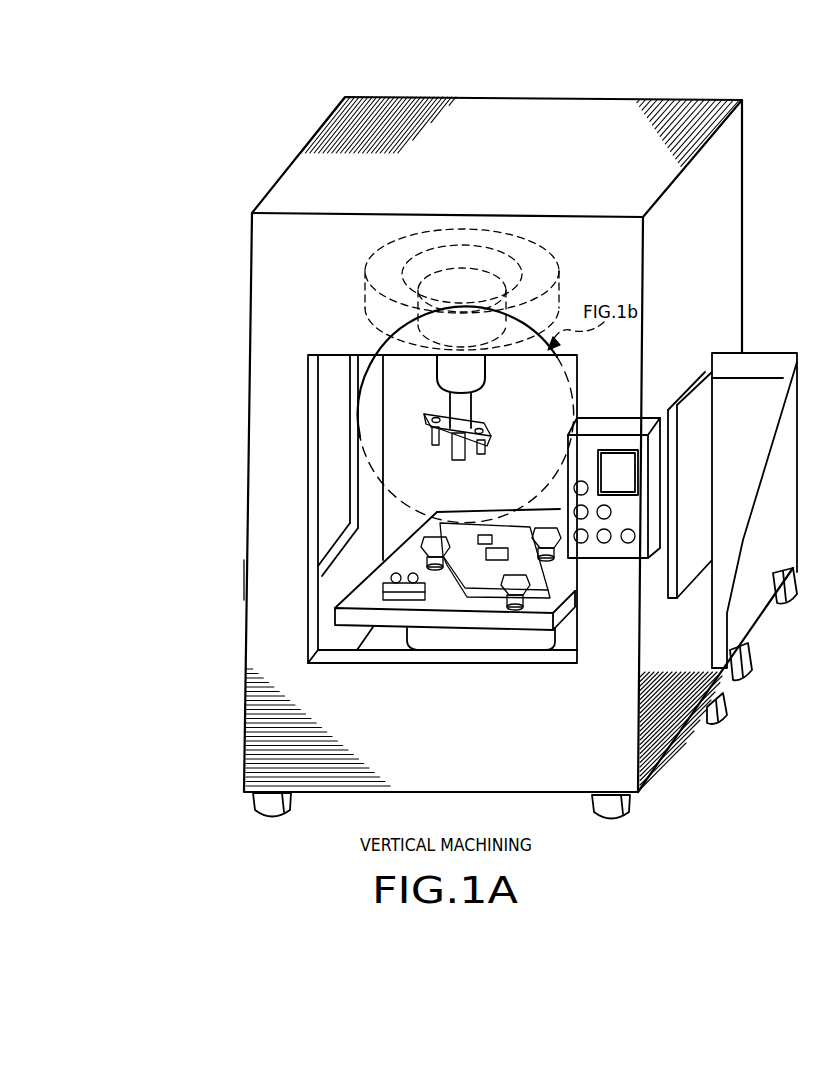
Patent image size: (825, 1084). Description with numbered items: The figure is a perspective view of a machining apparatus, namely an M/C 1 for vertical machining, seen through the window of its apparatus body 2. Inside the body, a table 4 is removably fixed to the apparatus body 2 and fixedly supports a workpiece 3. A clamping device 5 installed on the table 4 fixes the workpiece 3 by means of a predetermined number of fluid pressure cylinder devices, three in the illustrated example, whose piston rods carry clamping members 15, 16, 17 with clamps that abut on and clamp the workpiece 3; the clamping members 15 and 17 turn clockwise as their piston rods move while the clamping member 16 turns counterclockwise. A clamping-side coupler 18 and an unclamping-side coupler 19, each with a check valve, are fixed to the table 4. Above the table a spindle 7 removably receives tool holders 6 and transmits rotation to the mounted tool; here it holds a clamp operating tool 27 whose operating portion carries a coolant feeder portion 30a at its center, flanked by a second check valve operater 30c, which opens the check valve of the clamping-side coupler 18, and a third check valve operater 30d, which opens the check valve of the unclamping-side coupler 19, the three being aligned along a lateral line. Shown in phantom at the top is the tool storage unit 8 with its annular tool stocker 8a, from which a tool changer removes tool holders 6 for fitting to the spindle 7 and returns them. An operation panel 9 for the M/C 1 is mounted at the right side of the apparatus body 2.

The M/C 1 is at (238, 582).
The apparatus body 2 is at (290, 408).
The workpiece 3 is at (500, 516).
The table 4 is at (410, 547).
The clamping device 5 is at (545, 500).
The tool holders 6 is at (433, 410).
The spindle 7 is at (484, 373).
The tool storage unit 8 is at (352, 290).
The annular tool stocker 8a is at (548, 283).
The operation panel 9 is at (612, 553).
The clamping member 15 is at (513, 586).
The clamping member 16 is at (562, 480).
The clamping member 17 is at (445, 527).
The clamping-side coupler 18 is at (392, 577).
The unclamping-side coupler 19 is at (418, 577).
The clamp operating tool 27 is at (514, 422).
The coolant feeder portion 30a is at (420, 495).
The second check valve operater 30c is at (433, 444).
The third check valve operater 30d is at (485, 452).